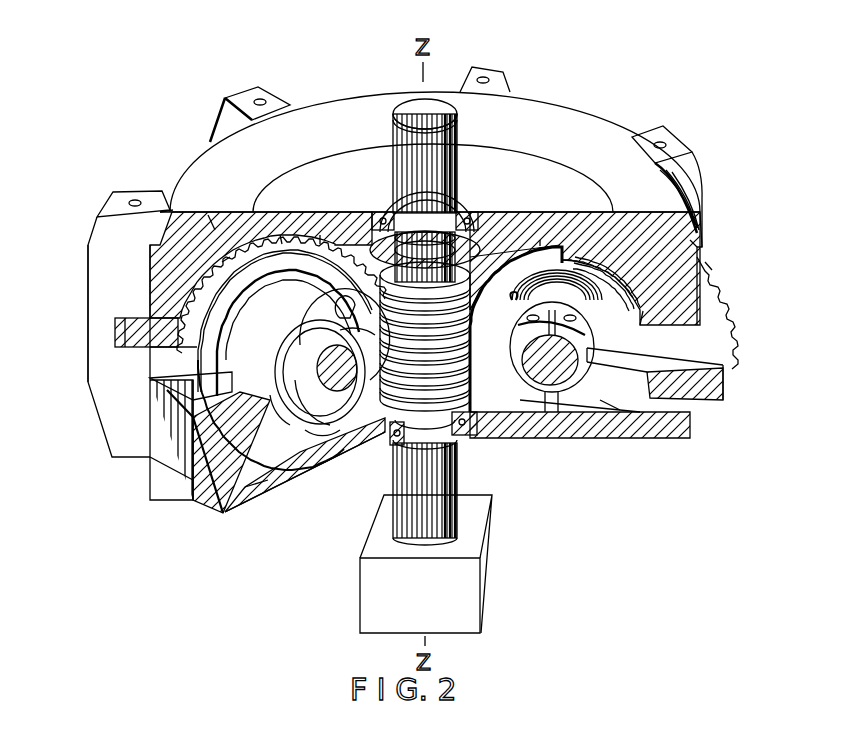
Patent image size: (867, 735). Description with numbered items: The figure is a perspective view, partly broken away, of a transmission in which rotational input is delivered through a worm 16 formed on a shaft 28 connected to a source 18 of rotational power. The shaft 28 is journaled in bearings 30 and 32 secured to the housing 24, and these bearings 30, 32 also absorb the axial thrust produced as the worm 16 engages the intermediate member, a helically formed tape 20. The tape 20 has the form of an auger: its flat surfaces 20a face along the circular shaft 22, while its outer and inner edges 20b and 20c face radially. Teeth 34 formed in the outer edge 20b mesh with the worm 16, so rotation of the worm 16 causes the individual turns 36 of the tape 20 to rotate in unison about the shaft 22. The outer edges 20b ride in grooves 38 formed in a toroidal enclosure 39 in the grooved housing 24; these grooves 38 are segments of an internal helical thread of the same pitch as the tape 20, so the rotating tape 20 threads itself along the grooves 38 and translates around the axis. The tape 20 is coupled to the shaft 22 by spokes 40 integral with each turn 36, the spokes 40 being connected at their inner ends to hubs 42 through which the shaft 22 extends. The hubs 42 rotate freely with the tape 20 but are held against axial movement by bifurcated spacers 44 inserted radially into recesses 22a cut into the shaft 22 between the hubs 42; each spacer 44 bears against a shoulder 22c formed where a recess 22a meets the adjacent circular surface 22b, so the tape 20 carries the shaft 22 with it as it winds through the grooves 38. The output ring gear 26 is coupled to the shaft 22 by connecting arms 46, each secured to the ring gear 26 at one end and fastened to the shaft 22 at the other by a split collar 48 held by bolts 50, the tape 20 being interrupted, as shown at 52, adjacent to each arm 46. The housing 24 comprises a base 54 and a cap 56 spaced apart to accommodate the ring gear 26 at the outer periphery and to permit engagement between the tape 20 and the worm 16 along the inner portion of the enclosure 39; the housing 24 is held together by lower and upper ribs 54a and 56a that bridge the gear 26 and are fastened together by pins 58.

The worm 16 is at (488, 222).
The source of rotational power 18 is at (492, 566).
The helically formed tape 20 is at (522, 236).
The flat surfaces 20a is at (268, 482).
The outer edge 20b is at (228, 212).
The inner edge 20c is at (640, 347).
The circular shaft 22 is at (556, 392).
The recesses 22a is at (320, 420).
The circular surface 22b is at (302, 440).
The shoulder 22c is at (285, 422).
The grooved housing 24 is at (165, 468).
The ring gear 26 is at (120, 335).
The shaft 28 is at (460, 490).
The bearing 30 is at (462, 213).
The bearing 32 is at (478, 432).
The teeth 34 is at (282, 238).
The turns 36 is at (322, 238).
The grooves 38 is at (150, 380).
The toroidal enclosure 39 is at (208, 212).
The spokes 40 is at (514, 296).
The hubs 42 is at (595, 280).
The spacers 44 is at (568, 400).
The connecting arms 46 is at (630, 420).
The split collar 48 is at (560, 378).
The bolts 50 is at (530, 350).
The interruption of tape 52 is at (545, 245).
The base 54 is at (212, 500).
The lower rib 54a is at (122, 405).
The cap 56 is at (170, 210).
The upper rib 56a is at (100, 240).
The pins 58 is at (135, 200).